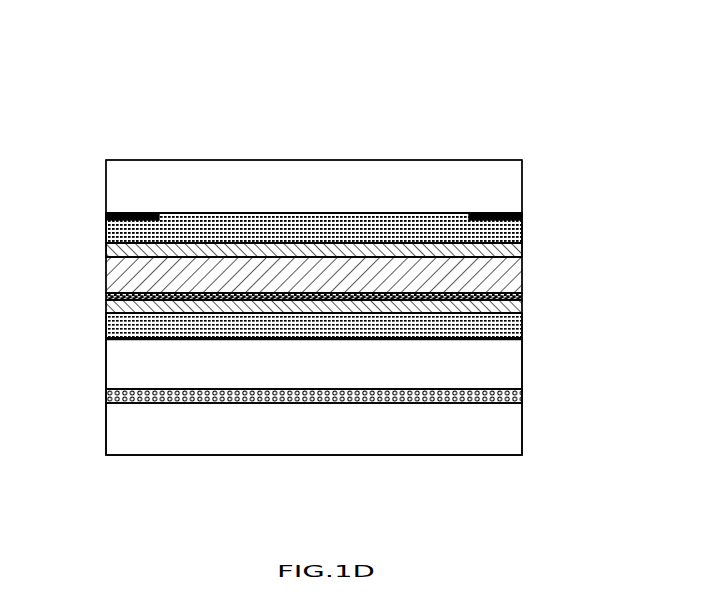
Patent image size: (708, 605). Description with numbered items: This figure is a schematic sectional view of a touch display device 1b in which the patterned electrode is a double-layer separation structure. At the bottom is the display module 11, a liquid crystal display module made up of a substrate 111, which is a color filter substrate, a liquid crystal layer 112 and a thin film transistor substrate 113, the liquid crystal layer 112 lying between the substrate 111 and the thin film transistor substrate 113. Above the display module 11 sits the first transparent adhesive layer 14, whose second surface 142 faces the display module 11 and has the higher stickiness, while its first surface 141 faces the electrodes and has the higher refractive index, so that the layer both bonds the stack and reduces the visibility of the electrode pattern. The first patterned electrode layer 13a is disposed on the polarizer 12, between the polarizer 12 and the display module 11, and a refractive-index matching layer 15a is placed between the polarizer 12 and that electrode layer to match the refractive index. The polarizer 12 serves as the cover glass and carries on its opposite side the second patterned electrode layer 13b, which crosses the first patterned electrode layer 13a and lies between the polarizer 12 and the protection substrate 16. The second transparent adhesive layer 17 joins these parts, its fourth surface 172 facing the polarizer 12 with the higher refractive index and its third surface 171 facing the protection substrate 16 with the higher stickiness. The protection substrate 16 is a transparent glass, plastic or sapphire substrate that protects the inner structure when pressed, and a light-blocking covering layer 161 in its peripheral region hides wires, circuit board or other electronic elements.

The touch display device 1b is at (150, 47).
The protection substrate 16 is at (302, 160).
The covering layer 161 is at (144, 213).
The second transparent adhesive layer 17 is at (583, 210).
The third surface 171 is at (522, 215).
The fourth surface 172 is at (522, 250).
The second patterned electrode layer 13b is at (107, 253).
The polarizer 12 is at (112, 272).
The refractive-index matching layer 15a is at (107, 297).
The first patterned electrode layer 13a is at (107, 308).
The first transparent adhesive layer 14 is at (579, 300).
The first surface 141 is at (522, 316).
The second surface 142 is at (522, 338).
The display module 11 is at (52, 348).
The substrate 111 is at (106, 368).
The liquid crystal layer 112 is at (106, 398).
The thin film transistor substrate 113 is at (106, 434).